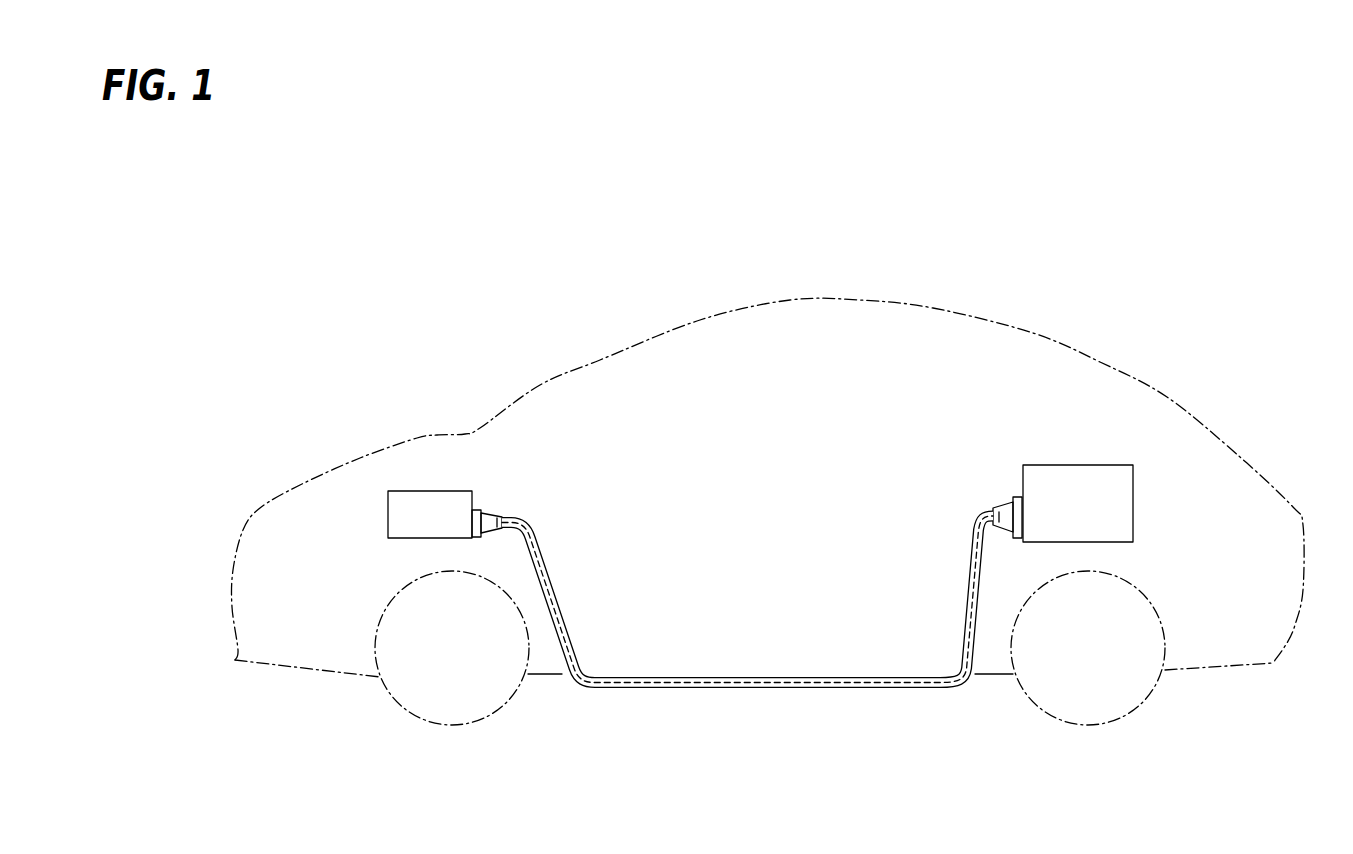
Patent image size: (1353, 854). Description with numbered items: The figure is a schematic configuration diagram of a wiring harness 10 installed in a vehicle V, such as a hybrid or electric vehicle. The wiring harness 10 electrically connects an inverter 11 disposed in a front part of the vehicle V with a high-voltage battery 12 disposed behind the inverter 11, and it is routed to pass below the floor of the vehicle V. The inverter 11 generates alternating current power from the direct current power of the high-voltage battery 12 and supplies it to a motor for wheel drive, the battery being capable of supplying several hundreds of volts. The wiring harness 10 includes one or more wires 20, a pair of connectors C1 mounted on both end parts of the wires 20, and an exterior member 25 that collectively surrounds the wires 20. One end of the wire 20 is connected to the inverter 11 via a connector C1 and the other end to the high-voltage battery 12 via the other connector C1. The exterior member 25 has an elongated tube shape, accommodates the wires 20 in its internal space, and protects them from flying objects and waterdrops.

The wiring harness 10 is at (750, 542).
The inverter 11 is at (448, 491).
The high-voltage battery 12 is at (1072, 465).
The wire 20 is at (546, 578).
The exterior member 25 is at (533, 542).
The connector C1 is at (487, 510).
The vehicle V is at (1052, 337).